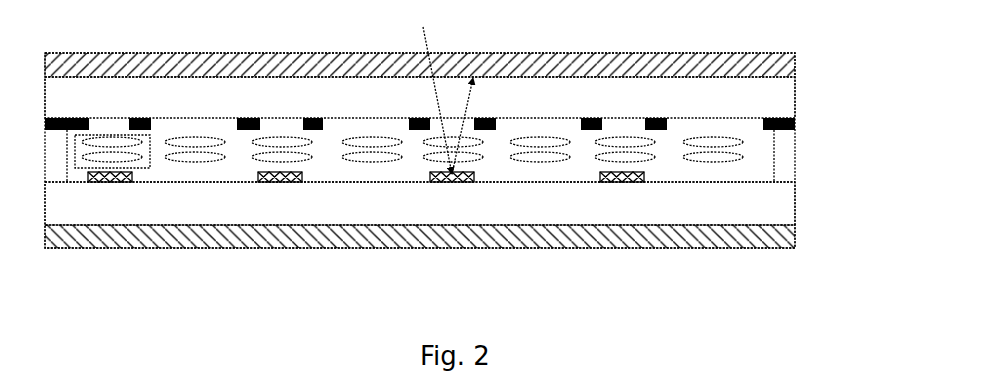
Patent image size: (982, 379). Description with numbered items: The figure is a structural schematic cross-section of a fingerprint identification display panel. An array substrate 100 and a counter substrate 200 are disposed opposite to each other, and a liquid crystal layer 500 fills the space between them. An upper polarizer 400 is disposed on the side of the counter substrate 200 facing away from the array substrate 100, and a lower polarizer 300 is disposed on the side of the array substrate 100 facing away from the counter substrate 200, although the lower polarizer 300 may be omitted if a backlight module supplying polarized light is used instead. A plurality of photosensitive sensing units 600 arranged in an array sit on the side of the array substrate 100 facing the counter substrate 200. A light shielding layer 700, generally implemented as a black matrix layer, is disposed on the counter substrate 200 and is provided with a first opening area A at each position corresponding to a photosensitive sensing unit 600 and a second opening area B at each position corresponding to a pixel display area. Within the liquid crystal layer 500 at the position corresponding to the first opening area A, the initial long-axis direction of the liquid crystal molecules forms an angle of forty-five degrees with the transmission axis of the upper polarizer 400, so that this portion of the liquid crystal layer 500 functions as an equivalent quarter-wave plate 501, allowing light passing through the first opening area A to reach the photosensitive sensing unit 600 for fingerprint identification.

The array substrate 100 is at (783, 203).
The counter substrate 200 is at (783, 97).
The lower polarizer 300 is at (795, 237).
The upper polarizer 400 is at (795, 62).
The liquid crystal layer 500 is at (743, 150).
The equivalent quarter-wave plate 501 is at (150, 168).
The photosensitive sensing unit 600 is at (105, 183).
The light shielding layer 700 is at (141, 122).
The first opening area A is at (110, 125).
The second opening area B is at (200, 125).